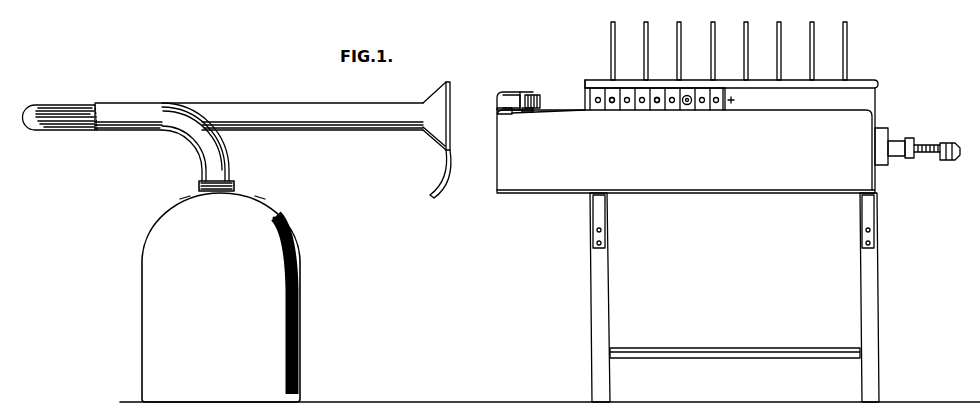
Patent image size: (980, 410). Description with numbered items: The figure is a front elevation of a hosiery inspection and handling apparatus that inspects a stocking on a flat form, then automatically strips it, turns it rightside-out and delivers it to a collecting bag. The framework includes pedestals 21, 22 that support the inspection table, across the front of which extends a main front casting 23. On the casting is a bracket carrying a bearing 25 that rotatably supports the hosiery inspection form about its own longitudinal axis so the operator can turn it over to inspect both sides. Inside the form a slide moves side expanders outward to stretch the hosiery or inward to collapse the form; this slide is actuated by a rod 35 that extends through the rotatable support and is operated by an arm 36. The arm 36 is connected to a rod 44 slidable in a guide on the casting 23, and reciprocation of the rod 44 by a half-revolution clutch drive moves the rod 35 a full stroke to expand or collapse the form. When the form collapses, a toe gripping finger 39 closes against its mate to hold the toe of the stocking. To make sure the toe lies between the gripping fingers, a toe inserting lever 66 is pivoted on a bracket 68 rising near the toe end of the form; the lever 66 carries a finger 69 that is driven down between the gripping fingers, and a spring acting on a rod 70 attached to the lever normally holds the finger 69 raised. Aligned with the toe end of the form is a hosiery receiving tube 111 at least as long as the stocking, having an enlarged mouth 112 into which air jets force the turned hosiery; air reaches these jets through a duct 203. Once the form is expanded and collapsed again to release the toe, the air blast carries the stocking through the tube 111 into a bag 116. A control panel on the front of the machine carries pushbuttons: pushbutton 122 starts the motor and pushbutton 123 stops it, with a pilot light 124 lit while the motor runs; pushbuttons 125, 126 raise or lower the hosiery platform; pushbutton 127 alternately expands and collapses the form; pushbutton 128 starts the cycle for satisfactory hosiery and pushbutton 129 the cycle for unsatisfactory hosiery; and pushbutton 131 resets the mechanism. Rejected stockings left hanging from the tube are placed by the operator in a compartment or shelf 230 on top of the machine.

The hosiery receiving tube 111 is at (288, 103).
The enlarged mouth 112 is at (450, 95).
The duct 203 is at (440, 192).
The bag 116 is at (300, 345).
The finger 69 is at (497, 94).
The toe inserting lever 66 is at (512, 93).
The rod 70 is at (540, 101).
The toe gripping finger 39 is at (497, 112).
The bracket 68 is at (528, 113).
The main front casting 23 is at (875, 98).
The compartment or shelf 230 is at (865, 80).
The pushbutton 127 is at (585, 92).
The pushbutton 123 is at (744, 99).
The pushbutton 128 is at (612, 92).
The pushbutton 131 is at (628, 91).
The pushbutton 125 is at (669, 91).
The pushbutton 122 is at (704, 91).
The pushbutton 129 is at (627, 112).
The pushbutton 126 is at (658, 112).
The pilot light 124 is at (688, 106).
The bearing 25 is at (891, 158).
The rod 44 is at (914, 145).
The rod 35 is at (926, 153).
The arm 36 is at (953, 143).
The pedestal 21 is at (603, 297).
The pedestal 22 is at (878, 297).